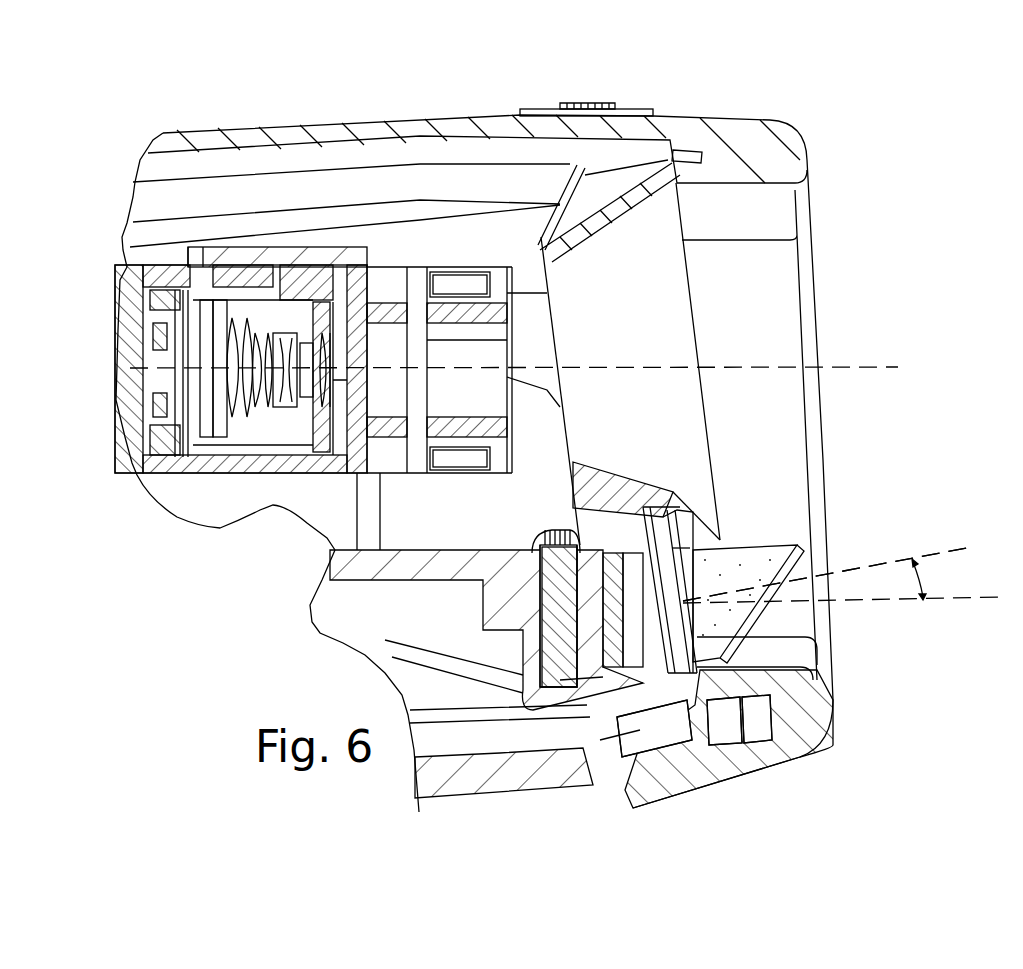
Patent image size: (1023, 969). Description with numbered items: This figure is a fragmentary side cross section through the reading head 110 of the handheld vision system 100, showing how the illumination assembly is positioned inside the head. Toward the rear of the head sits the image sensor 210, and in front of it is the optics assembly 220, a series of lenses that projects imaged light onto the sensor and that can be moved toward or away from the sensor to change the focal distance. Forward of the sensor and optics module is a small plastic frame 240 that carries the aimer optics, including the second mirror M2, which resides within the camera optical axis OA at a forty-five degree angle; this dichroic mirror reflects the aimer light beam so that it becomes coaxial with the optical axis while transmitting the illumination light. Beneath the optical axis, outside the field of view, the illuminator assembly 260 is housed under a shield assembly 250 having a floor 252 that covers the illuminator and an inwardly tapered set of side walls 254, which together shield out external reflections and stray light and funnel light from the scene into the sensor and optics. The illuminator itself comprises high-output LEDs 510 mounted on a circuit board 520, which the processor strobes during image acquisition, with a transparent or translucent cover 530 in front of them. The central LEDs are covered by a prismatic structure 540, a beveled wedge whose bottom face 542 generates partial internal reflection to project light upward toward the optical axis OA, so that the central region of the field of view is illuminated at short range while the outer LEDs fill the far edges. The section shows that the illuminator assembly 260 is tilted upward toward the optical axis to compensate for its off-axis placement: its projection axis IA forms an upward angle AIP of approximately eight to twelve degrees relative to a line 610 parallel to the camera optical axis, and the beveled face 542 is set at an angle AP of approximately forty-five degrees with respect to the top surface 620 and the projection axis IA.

The vision system 100 is at (727, 100).
The reading head 110 is at (765, 122).
The image sensor 210 is at (180, 272).
The optics assembly 220 is at (237, 437).
The plastic frame 240 is at (392, 295).
The shield assembly 250 is at (664, 496).
The floor 252 is at (633, 487).
The side walls 254 is at (668, 327).
The illuminator assembly 260 is at (738, 655).
The LEDs 510 is at (672, 655).
The circuit board 520 is at (643, 683).
The cover 530 is at (748, 538).
The prismatic structure 540 is at (752, 553).
The bottom face 542 is at (770, 607).
The line parallel to the camera optical axis 610 is at (995, 604).
The top surface 620 is at (672, 552).
The second mirror M2 is at (480, 345).
The camera optical axis OA is at (882, 367).
The angle of the beveled face AP is at (809, 598).
The projection axis IA is at (960, 547).
The upward angle of the projection axis AIP is at (927, 578).